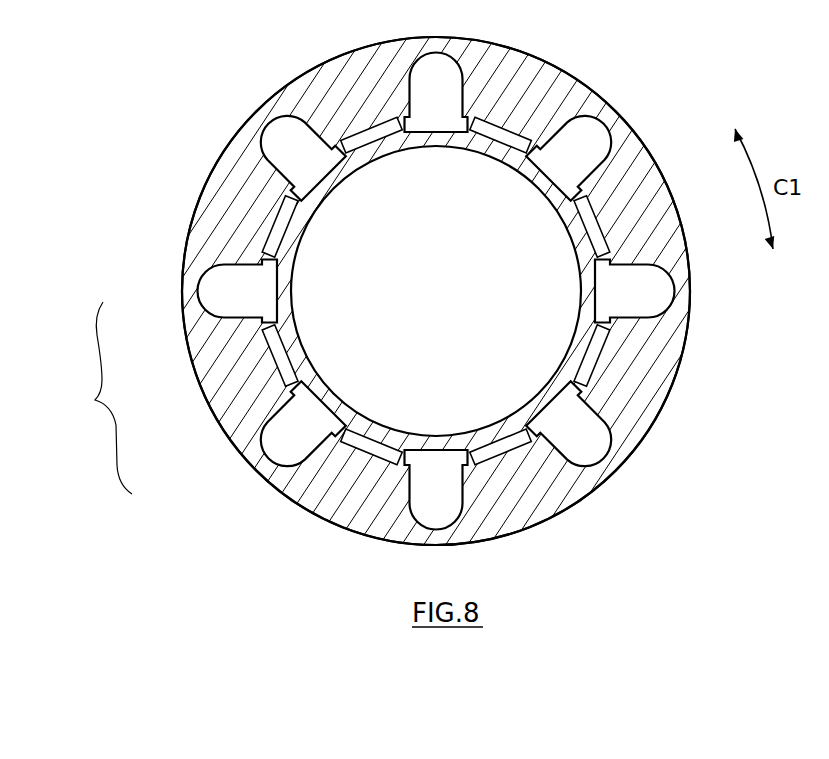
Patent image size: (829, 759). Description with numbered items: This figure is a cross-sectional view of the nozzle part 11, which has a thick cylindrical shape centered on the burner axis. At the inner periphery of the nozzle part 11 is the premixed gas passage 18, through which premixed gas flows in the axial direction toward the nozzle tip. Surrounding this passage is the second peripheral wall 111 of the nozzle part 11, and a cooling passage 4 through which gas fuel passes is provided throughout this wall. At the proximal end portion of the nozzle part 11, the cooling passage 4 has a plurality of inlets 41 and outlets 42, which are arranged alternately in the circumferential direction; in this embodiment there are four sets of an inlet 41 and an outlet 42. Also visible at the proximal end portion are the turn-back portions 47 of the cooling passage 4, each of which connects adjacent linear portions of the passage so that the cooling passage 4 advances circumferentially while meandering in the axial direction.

The cooling passage 4 is at (102, 398).
The nozzle part 11 is at (172, 202).
The second peripheral wall 111 is at (184, 232).
The premixed gas passage 18 is at (450, 302).
The inlet 41 is at (460, 79).
The outlet 42 is at (272, 127).
The turn-back portion 47 is at (362, 126).